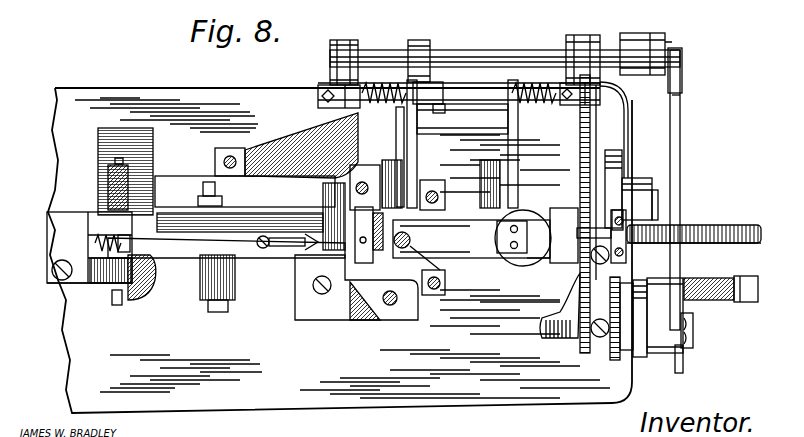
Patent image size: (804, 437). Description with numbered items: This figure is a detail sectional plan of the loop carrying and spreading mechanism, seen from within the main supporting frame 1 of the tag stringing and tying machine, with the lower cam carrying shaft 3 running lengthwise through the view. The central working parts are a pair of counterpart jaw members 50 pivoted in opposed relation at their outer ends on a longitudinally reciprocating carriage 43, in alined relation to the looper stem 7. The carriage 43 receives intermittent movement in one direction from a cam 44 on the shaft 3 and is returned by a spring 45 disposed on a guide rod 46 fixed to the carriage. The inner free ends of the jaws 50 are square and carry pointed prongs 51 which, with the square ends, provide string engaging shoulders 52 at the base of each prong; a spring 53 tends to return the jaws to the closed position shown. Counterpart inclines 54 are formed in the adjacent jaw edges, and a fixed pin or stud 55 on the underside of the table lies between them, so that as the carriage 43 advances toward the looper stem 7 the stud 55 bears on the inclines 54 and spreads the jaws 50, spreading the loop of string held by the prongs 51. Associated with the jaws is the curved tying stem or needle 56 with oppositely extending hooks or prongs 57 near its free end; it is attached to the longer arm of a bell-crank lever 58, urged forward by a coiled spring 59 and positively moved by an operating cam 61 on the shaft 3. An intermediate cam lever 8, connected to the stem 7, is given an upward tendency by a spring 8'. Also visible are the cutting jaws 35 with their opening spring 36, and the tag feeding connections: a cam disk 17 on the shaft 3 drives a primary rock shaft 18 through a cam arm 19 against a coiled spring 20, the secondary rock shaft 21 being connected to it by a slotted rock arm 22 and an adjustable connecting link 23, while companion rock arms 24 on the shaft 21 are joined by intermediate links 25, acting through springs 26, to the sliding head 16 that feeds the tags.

The main supporting frame 1 is at (296, 405).
The lower cam carrying shaft 3 is at (247, 213).
The looper stem 7 is at (343, 247).
The intermediate cam lever 8 is at (225, 283).
The spring 8' is at (196, 195).
The sliding head 16 is at (388, 160).
The cam disk 17 is at (614, 170).
The primary rock shaft 18 is at (752, 302).
The cam arm 19 is at (640, 297).
The coiled spring 20 is at (718, 302).
The secondary rock shaft 21 is at (508, 50).
The slotted rock arm 22 is at (662, 46).
The adjustable connecting link 23 is at (680, 186).
The companion rock arms 24 is at (341, 42).
The intermediate links 25 is at (408, 152).
The springs 26 is at (380, 103).
The cutting jaws 35 is at (92, 238).
The spring 36 is at (88, 284).
The carriage 43 is at (552, 262).
The cam 44 is at (560, 340).
The spring 45 is at (718, 226).
The guide rod 46 is at (712, 244).
The jaw members 50 is at (471, 239).
The pointed prongs 51 is at (405, 236).
The string engaging shoulders 52 is at (377, 241).
The spring 53 is at (548, 228).
The counterpart inclines 54 is at (440, 270).
The fixed pin or stud 55 is at (500, 305).
The tying stem or needle 56 is at (289, 249).
The hooks or prongs 57 is at (302, 262).
The bell-crank lever 58 is at (182, 250).
The coiled spring 59 is at (108, 178).
The operating cam 61 is at (146, 152).